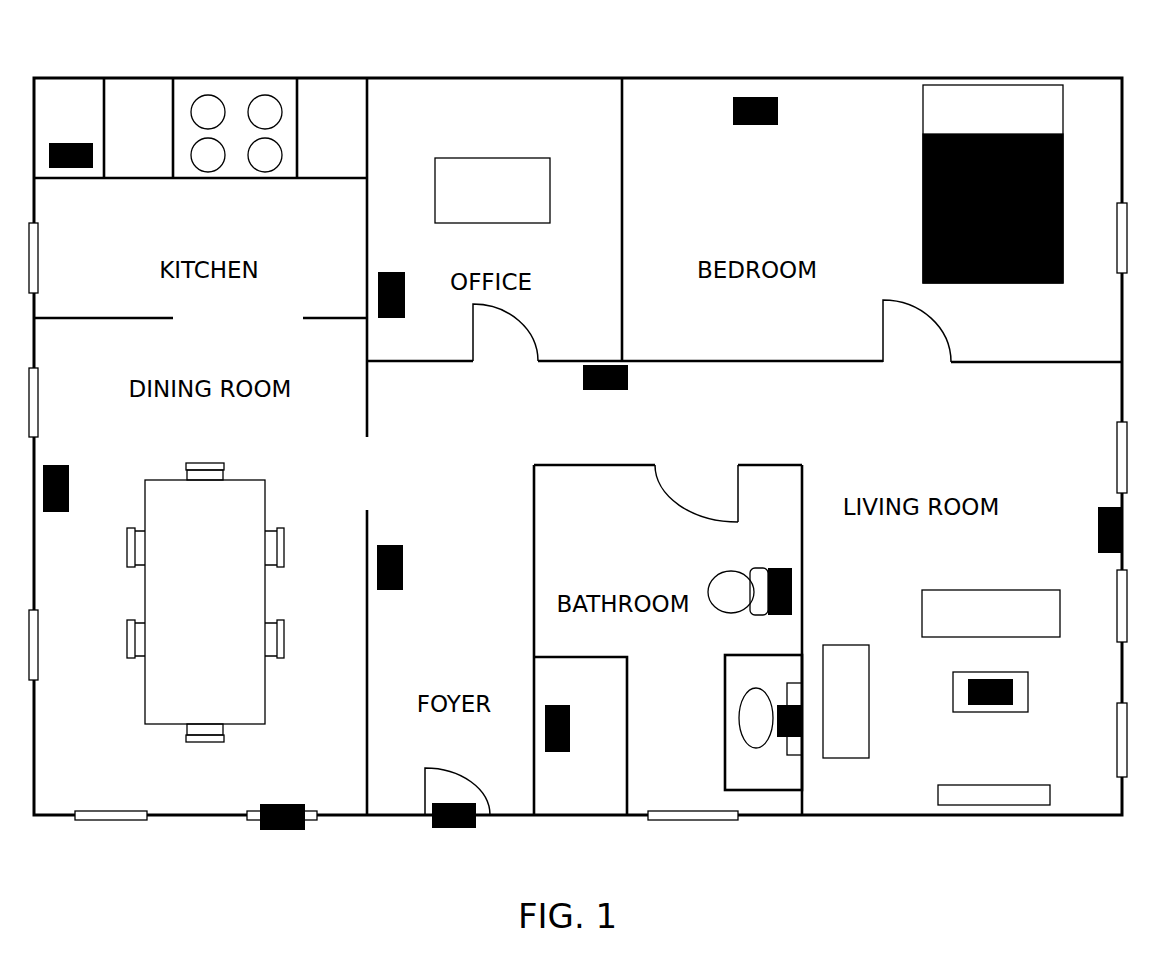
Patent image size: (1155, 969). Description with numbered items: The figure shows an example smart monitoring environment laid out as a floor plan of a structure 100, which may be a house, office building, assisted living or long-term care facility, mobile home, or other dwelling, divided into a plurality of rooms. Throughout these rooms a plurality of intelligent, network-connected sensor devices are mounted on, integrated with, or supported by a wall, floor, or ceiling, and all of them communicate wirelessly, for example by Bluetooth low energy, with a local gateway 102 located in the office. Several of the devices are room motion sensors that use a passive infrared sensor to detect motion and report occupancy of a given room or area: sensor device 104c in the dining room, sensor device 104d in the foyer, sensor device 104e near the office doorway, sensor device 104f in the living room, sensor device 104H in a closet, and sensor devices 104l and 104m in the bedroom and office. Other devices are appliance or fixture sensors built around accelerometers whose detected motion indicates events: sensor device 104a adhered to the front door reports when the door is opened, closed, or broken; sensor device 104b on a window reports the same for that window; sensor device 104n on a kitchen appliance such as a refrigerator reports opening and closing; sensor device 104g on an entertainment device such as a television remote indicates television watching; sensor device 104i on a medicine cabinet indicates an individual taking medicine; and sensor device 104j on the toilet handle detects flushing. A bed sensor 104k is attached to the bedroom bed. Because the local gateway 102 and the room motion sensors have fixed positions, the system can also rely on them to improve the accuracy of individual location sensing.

The structure 100 is at (699, 78).
The local gateway 102 is at (450, 158).
The sensor device 104a is at (453, 828).
The sensor device 104b is at (297, 804).
The sensor device 104c is at (55, 465).
The sensor device 104d is at (390, 545).
The sensor device 104e is at (583, 378).
The sensor device 104f is at (1098, 515).
The sensor device 104g is at (968, 690).
The sensor device 104H is at (570, 735).
The sensor device 104i is at (777, 740).
The sensor device 104j is at (783, 568).
The bed sensor 104k is at (923, 157).
The sensor device 104l is at (733, 110).
The sensor device 104m is at (390, 272).
The sensor device 104n is at (71, 168).